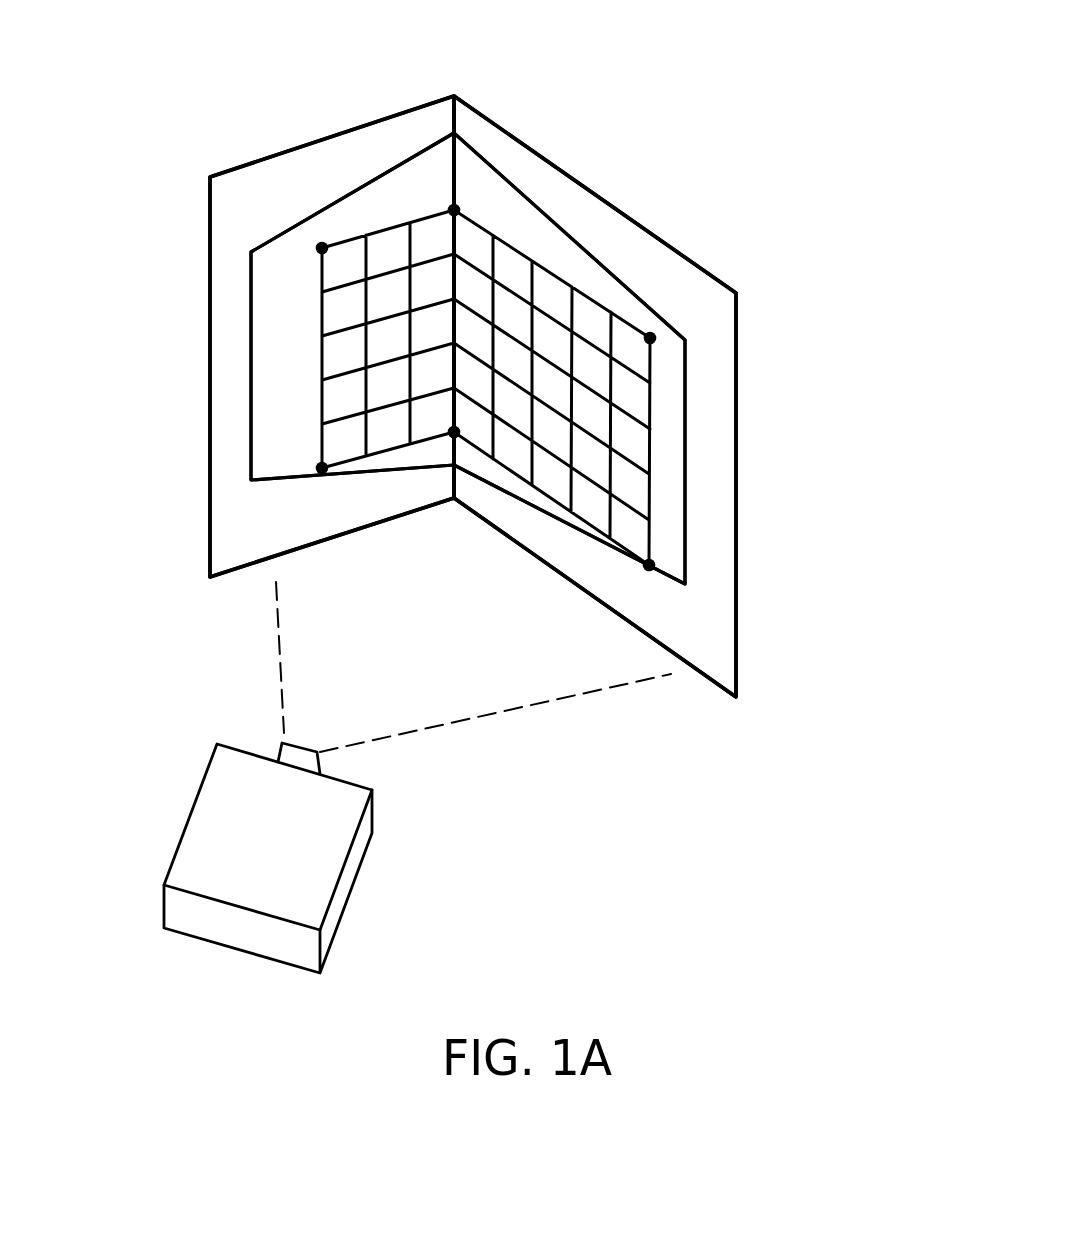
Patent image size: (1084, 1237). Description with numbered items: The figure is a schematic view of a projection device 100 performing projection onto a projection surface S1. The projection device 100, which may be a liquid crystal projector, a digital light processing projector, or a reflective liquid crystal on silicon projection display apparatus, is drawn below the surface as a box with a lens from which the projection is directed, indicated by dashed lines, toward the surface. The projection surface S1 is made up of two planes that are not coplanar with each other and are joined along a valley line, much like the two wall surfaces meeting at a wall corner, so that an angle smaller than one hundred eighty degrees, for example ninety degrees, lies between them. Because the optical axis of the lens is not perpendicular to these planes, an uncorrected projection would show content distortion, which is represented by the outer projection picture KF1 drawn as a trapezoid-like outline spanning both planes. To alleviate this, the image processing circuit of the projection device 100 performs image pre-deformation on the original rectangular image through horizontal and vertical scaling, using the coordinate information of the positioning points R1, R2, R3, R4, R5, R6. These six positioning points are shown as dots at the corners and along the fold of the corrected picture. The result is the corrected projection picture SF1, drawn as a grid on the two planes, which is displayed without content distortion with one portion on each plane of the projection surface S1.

The projection device 100 is at (322, 860).
The projection surface S1 is at (797, 3).
The positioning point R1 is at (322, 248).
The positioning point R2 is at (322, 468).
The positioning point R3 is at (454, 210).
The positioning point R4 is at (454, 432).
The positioning point R5 is at (650, 338).
The positioning point R6 is at (649, 565).
The projection picture SF1 is at (516, 243).
The projection picture KF1 is at (602, 263).